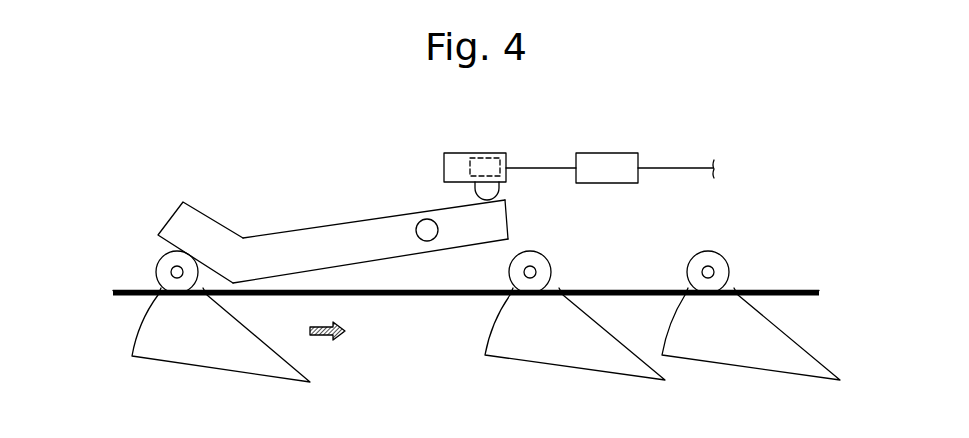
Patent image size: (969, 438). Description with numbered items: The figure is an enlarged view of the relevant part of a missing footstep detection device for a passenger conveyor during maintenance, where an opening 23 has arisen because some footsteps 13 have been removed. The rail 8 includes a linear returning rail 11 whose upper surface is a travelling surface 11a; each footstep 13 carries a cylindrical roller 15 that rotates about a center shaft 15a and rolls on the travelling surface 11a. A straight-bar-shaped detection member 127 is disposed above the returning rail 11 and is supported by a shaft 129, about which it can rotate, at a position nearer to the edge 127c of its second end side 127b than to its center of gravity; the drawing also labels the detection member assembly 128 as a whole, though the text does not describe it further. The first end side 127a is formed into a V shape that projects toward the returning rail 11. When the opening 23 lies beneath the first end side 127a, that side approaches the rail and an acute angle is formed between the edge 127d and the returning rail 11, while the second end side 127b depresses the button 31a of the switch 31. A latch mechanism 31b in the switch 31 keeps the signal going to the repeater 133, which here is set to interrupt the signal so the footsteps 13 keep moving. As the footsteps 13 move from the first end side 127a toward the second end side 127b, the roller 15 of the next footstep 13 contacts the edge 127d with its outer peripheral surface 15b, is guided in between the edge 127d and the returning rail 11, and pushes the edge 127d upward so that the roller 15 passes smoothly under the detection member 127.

The rail 8 is at (750, 290).
The returning rail 11 is at (782, 290).
The travelling surface 11a is at (818, 290).
The footstep 13 is at (260, 372).
The roller 15 is at (165, 282).
The center shaft 15a is at (175, 270).
The outer peripheral surface 15b is at (156, 271).
The opening 23 is at (390, 376).
The switch 31 is at (452, 162).
The button 31a is at (502, 186).
The latch mechanism 31b is at (484, 162).
The detection member 127 is at (335, 227).
The first end side 127a is at (263, 237).
The second end side 127b is at (505, 220).
The edge 127c is at (509, 229).
The edge 127d is at (198, 217).
The arm unit 128 is at (338, 172).
The shaft 129 is at (423, 218).
The repeater 133 is at (603, 160).